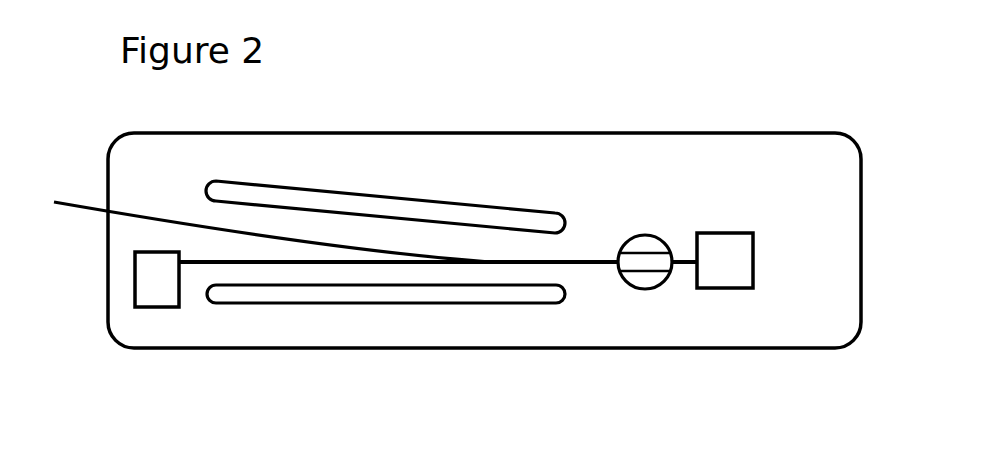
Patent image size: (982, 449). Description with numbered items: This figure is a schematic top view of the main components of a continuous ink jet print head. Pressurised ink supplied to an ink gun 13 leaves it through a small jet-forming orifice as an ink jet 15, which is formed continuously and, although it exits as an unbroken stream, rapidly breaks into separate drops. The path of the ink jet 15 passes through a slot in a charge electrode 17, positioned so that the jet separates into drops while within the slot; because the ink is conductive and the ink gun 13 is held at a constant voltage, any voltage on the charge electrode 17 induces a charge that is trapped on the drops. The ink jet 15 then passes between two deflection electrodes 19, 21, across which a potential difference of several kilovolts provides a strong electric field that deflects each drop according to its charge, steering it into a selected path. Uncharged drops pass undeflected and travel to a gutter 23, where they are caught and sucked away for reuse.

The ink gun 13 is at (725, 233).
The ink jet 15 is at (593, 258).
The charge electrode 17 is at (645, 235).
The deflection electrode 19 is at (325, 303).
The deflection electrode 21 is at (390, 196).
The gutter 23 is at (162, 307).